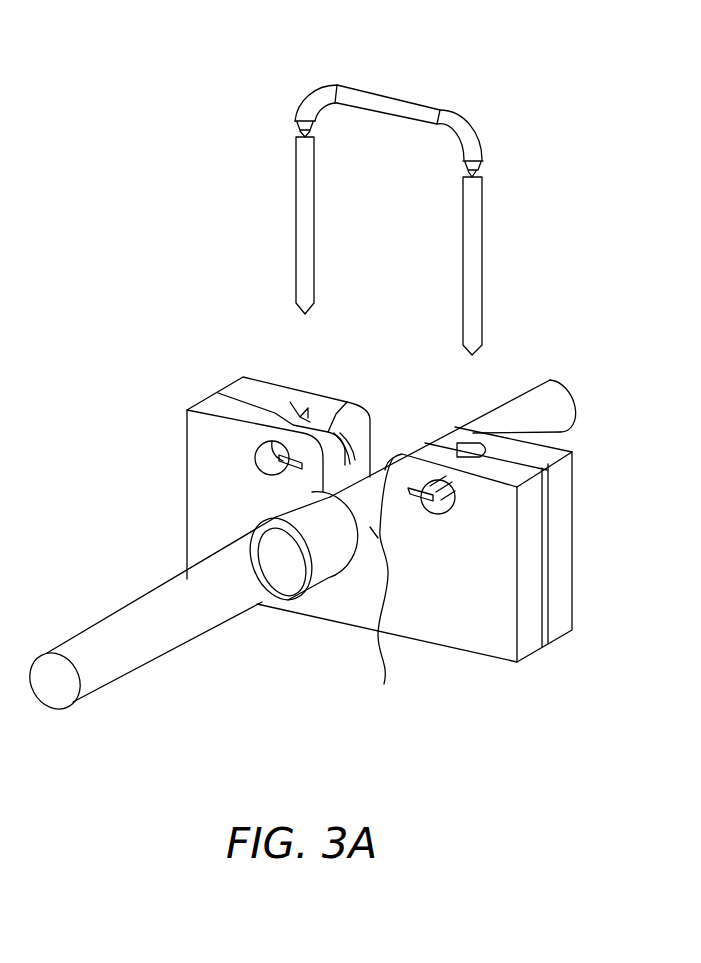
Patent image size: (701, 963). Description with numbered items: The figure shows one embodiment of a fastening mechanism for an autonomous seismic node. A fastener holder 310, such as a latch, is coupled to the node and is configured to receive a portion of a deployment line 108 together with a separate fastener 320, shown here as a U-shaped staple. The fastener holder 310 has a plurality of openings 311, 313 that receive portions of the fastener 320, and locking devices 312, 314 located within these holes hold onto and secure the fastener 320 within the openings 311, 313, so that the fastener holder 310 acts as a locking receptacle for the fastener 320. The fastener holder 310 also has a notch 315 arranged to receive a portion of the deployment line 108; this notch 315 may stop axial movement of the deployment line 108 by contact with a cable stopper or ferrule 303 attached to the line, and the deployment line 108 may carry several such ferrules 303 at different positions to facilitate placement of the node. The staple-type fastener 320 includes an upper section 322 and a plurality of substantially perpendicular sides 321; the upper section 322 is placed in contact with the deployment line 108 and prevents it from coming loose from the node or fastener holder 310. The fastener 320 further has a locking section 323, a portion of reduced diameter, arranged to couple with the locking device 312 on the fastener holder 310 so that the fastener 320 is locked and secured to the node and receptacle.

The deployment line 108 is at (107, 658).
The ferrule 303 is at (322, 573).
The fastener holder 310 is at (517, 664).
The opening 311 is at (563, 431).
The locking device 312 is at (457, 497).
The opening 313 is at (295, 403).
The locking device 314 is at (256, 460).
The notch 315 is at (396, 584).
The fastener 320 is at (300, 87).
The side 321 is at (296, 254).
The upper section 322 is at (382, 93).
The locking section 323 is at (484, 163).